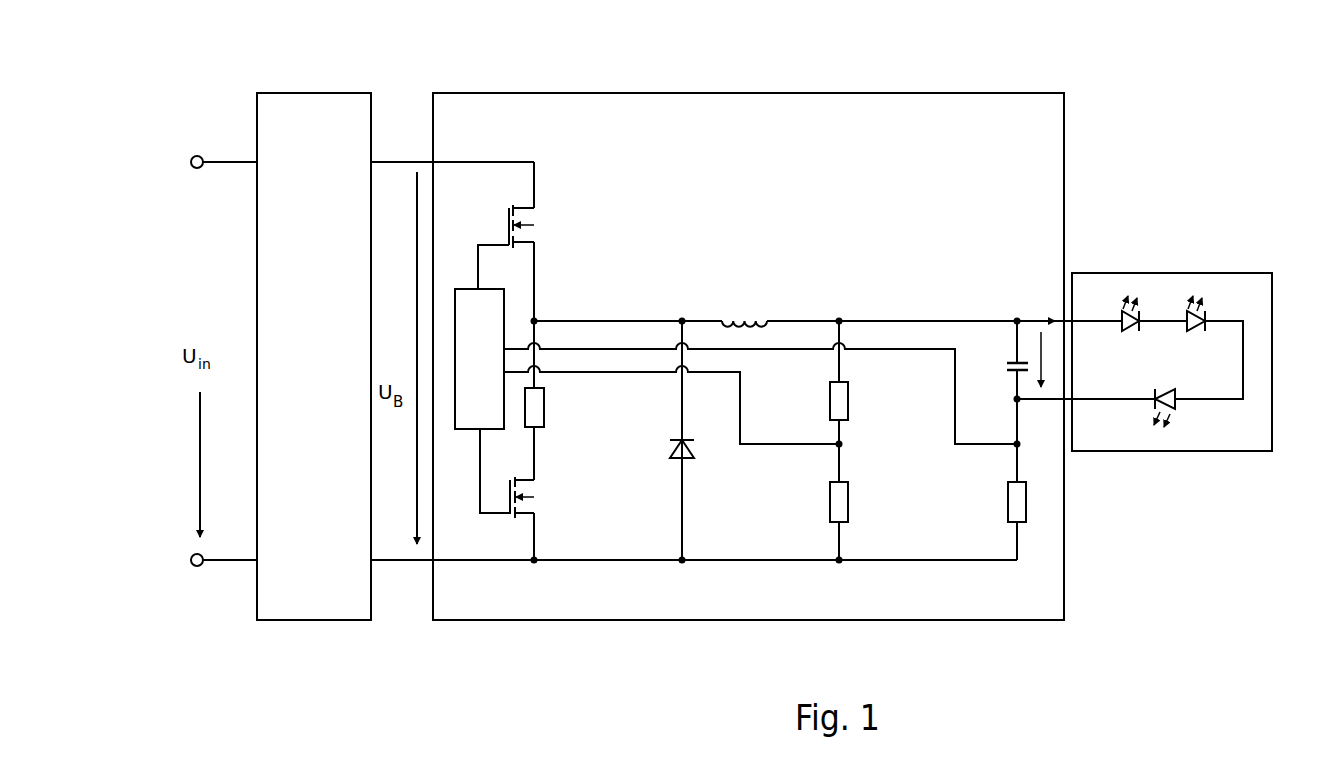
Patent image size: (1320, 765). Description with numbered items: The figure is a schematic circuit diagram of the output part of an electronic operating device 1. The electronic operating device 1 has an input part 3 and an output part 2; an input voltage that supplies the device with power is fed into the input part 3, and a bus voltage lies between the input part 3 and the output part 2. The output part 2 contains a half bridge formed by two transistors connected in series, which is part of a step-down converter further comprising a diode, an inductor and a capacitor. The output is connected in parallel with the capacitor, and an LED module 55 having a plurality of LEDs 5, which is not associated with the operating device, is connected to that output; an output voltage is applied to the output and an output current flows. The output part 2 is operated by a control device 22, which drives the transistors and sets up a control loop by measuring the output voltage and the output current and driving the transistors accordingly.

The electronic operating device 1 is at (802, 40).
The output part 2 is at (1021, 146).
The input part 3 is at (325, 141).
The control device 22 is at (490, 364).
The LED 5 is at (1173, 361).
The LED module 55 is at (1258, 440).